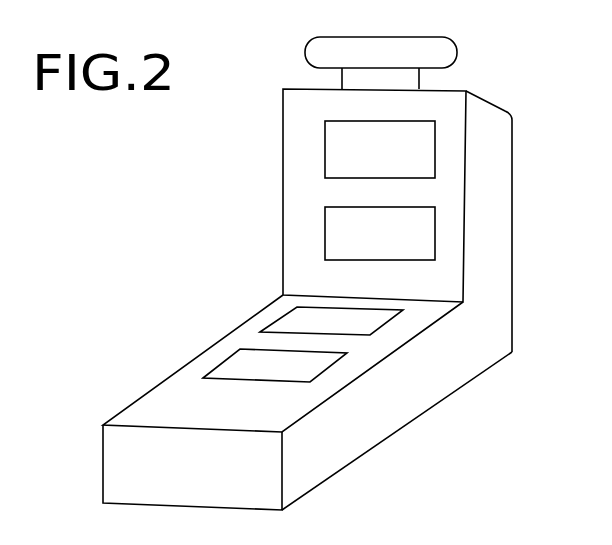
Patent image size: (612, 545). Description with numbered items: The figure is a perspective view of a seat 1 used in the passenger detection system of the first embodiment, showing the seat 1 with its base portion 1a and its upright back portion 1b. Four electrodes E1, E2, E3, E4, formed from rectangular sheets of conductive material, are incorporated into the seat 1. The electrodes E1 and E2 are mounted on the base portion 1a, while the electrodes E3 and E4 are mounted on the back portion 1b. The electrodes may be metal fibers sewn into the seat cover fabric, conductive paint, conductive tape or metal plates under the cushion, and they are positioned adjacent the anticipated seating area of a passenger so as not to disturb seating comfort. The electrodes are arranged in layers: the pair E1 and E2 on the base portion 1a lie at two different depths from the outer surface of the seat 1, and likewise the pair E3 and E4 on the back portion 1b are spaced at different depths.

The seat 1 is at (272, 289).
The base portion 1a is at (191, 372).
The back portion 1b is at (296, 119).
The electrode E1 is at (308, 372).
The electrode E2 is at (365, 322).
The electrode E3 is at (423, 238).
The electrode E4 is at (421, 148).